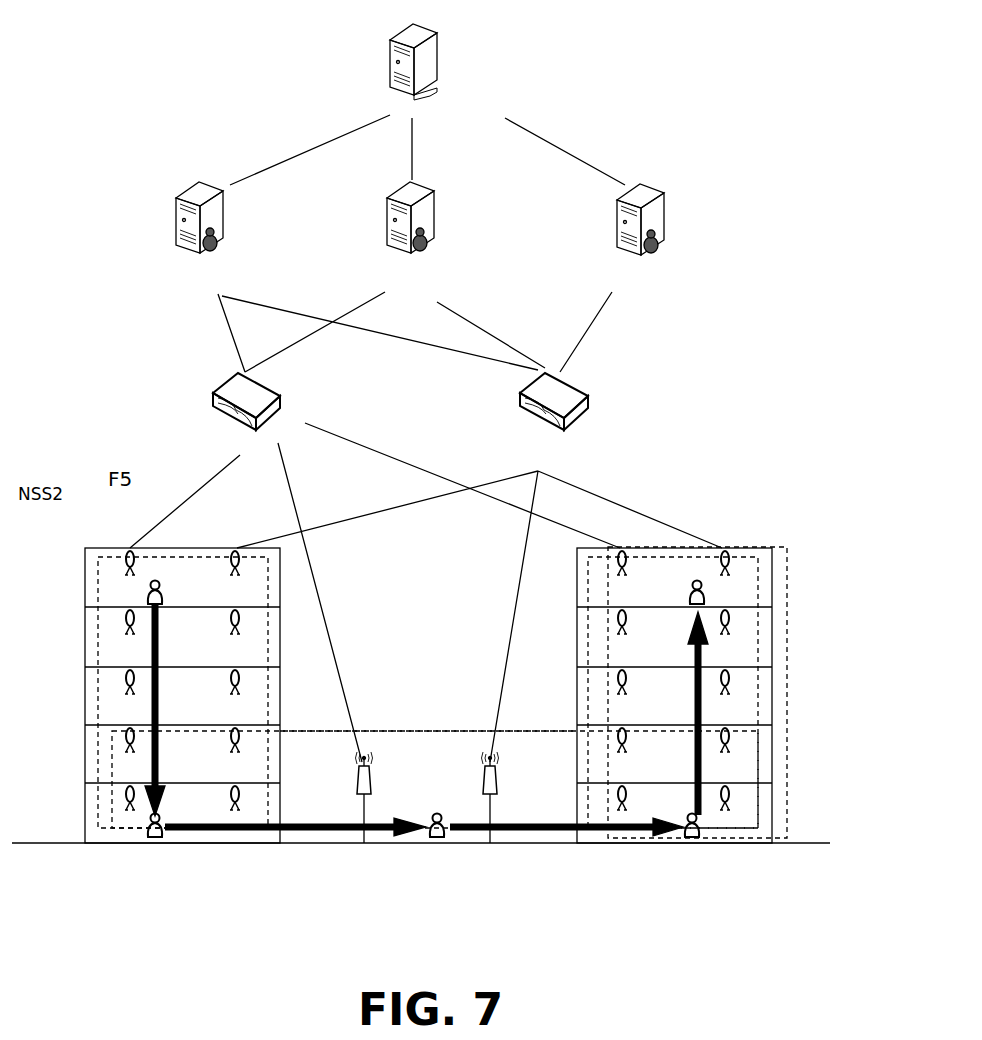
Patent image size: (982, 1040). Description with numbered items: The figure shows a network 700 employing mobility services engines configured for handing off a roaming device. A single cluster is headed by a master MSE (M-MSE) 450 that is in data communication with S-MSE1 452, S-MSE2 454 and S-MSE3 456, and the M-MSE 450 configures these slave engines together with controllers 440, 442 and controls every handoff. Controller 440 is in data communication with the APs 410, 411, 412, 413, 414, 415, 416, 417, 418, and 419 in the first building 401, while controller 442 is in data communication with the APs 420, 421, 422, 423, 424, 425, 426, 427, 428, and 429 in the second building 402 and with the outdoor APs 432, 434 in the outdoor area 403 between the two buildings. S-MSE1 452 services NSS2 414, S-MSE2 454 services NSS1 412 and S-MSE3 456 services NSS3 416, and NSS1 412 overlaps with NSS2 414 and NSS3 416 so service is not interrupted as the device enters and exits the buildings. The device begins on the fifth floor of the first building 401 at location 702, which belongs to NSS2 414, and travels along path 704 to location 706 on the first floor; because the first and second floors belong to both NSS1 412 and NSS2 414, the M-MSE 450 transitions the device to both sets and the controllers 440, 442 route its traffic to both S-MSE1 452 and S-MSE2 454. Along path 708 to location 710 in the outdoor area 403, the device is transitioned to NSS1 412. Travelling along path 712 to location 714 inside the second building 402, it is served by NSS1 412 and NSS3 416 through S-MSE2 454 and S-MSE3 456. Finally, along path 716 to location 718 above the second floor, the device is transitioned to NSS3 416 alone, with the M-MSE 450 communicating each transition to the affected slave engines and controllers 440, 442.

The network 700 is at (172, 26).
The master MSE (M-MSE) 450 is at (436, 46).
The S-MSE1 452 is at (228, 212).
The S-MSE2 454 is at (437, 212).
The S-MSE3 456 is at (668, 213).
The controller 440 is at (214, 384).
The controller 442 is at (588, 390).
The first building 401 is at (90, 846).
The second building 402 is at (770, 846).
The outdoor area 403 is at (521, 816).
The AP 410 is at (128, 574).
The AP 411 is at (243, 573).
The NSS1 / AP 412 is at (128, 630).
The AP 413 is at (242, 628).
The NSS2 / AP 414 is at (118, 570).
The AP 415 is at (243, 688).
The NSS3 / AP 416 is at (128, 745).
The AP 417 is at (240, 748).
The AP 418 is at (128, 800).
The AP 419 is at (243, 800).
The AP 420 is at (620, 575).
The AP 421 is at (730, 575).
The AP 422 is at (620, 630).
The AP 423 is at (732, 630).
The AP 424 is at (620, 670).
The AP 425 is at (732, 669).
The AP 426 is at (620, 728).
The AP 427 is at (732, 730).
The AP 428 is at (621, 802).
The AP 429 is at (730, 788).
The AP 432 is at (358, 785).
The AP 434 is at (497, 785).
The location 702 is at (158, 580).
The path 704 is at (153, 705).
The location 706 is at (153, 845).
The path 708 is at (247, 832).
The location 710 is at (436, 842).
The path 712 is at (497, 838).
The location 714 is at (692, 842).
The path 716 is at (700, 774).
The location 718 is at (697, 580).